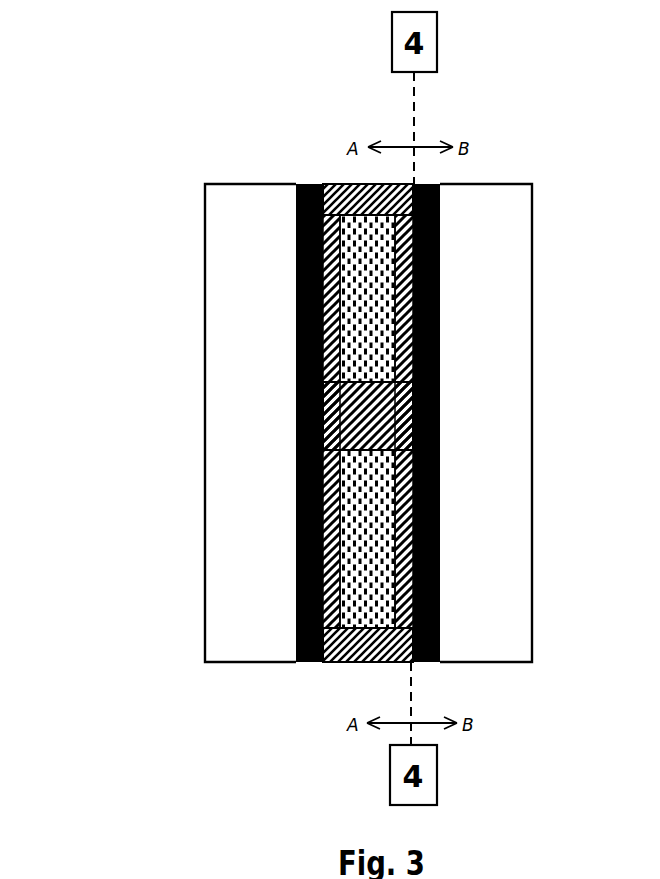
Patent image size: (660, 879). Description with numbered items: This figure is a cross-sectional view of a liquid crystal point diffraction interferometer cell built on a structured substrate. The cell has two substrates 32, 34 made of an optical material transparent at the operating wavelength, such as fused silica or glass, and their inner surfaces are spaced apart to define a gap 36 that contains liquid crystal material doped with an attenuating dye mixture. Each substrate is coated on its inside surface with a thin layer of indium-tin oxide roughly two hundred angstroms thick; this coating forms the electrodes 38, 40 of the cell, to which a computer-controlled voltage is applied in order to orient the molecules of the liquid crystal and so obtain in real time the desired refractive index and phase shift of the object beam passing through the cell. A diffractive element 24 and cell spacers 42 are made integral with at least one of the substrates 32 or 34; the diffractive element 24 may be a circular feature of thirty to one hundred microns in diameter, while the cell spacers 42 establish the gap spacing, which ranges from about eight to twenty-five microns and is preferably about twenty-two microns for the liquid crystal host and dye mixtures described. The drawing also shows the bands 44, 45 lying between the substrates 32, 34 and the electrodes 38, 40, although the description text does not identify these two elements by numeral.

The diffractive element 24 is at (440, 415).
The substrate 32 is at (243, 216).
The substrate 34 is at (487, 233).
The gap 36 is at (362, 527).
The electrode 38 is at (296, 583).
The electrode 40 is at (440, 583).
The cell spacer 42 is at (328, 184).
The second conductive band 44 is at (440, 295).
The first conductive band 45 is at (296, 295).